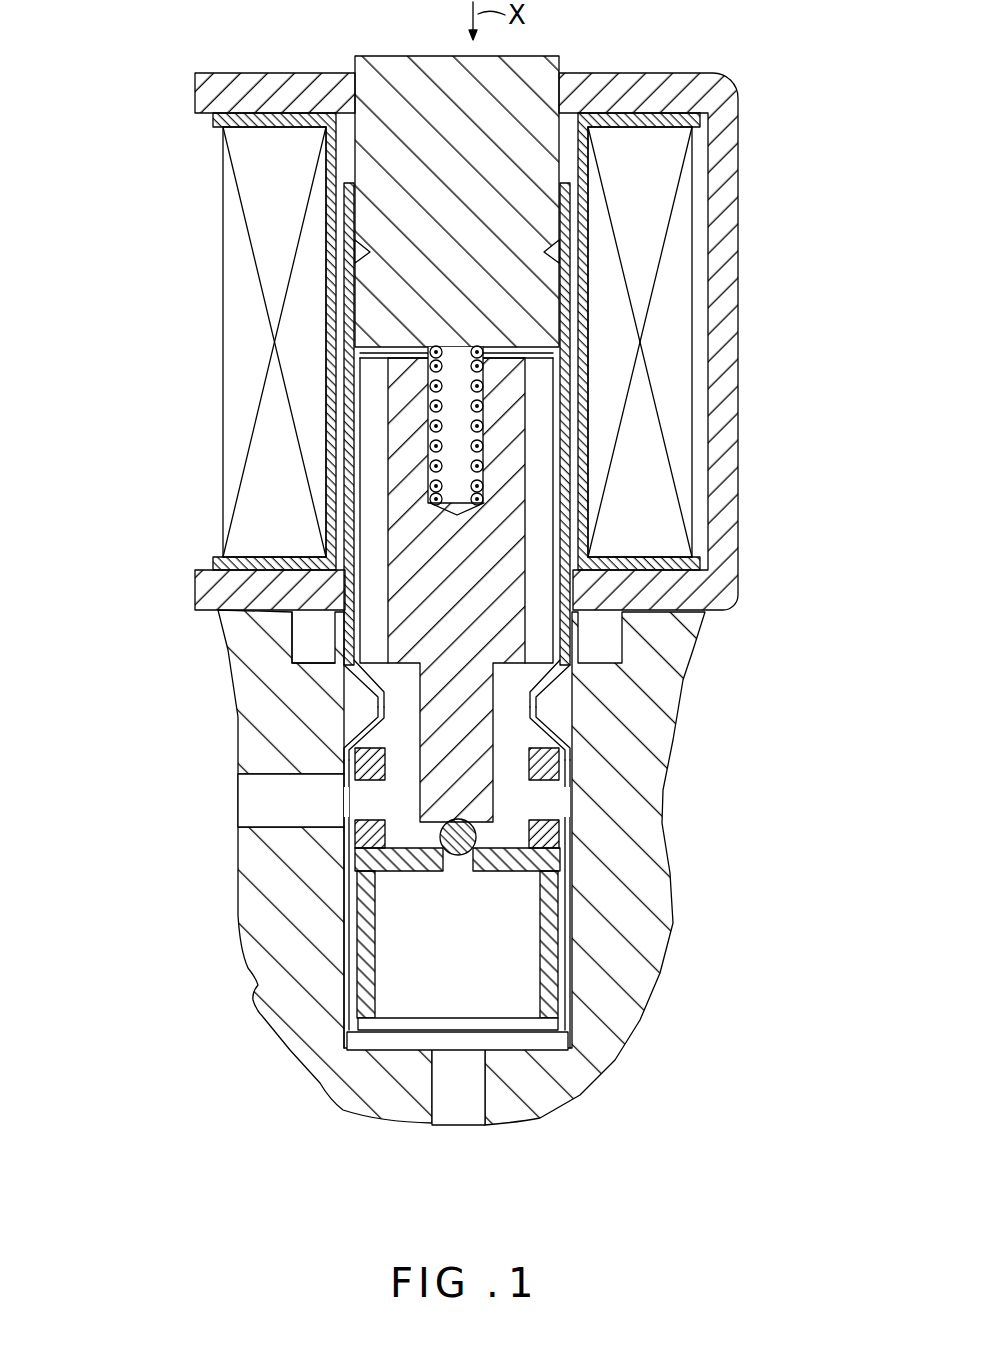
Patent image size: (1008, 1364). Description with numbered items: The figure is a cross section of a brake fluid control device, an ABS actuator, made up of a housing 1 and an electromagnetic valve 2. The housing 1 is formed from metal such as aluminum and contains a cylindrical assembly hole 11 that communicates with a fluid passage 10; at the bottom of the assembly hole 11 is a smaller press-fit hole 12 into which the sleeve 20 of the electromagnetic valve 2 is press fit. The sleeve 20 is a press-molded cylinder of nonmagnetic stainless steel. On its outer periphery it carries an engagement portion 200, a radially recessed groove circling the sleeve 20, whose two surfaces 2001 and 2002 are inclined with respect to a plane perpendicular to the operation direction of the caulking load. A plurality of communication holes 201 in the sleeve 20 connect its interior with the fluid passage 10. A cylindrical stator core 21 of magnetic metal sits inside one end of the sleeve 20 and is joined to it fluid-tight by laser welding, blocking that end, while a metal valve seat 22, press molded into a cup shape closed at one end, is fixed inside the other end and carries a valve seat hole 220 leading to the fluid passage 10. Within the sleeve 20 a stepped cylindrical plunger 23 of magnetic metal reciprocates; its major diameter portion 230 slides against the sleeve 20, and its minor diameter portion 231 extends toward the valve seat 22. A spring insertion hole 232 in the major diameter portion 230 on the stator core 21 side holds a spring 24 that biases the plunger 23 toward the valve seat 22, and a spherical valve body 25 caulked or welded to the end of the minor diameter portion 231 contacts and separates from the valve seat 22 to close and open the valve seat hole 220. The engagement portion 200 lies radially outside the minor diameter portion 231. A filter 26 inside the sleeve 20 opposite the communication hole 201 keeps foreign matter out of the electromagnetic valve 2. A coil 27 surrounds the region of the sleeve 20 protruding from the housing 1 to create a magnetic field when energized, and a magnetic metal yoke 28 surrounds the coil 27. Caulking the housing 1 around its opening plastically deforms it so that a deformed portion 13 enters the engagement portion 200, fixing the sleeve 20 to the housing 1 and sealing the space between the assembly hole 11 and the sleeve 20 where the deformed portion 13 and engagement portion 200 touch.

The housing 1 is at (405, 903).
The electromagnetic valve 2 is at (490, 542).
The fluid passage 10 is at (252, 805).
The assembly hole 11 is at (555, 860).
The press-fit hole 12 is at (562, 1048).
The deformed portion 13 is at (340, 748).
The sleeve 20 is at (609, 615).
The engagement portion 200 is at (609, 710).
The surface 2001 is at (552, 700).
The surface 2002 is at (552, 737).
The communication hole 201 is at (565, 802).
The stator core 21 is at (541, 70).
The valve seat 22 is at (566, 924).
The valve seat hole 220 is at (457, 866).
The plunger 23 is at (329, 575).
The major diameter portion 230 is at (413, 467).
The minor diameter portion 231 is at (362, 710).
The spring insertion hole 232 is at (457, 437).
The spring 24 is at (362, 353).
The spherical valve body 25 is at (387, 840).
The filter 26 is at (340, 758).
The coil 27 is at (668, 293).
The yoke 28 is at (728, 188).